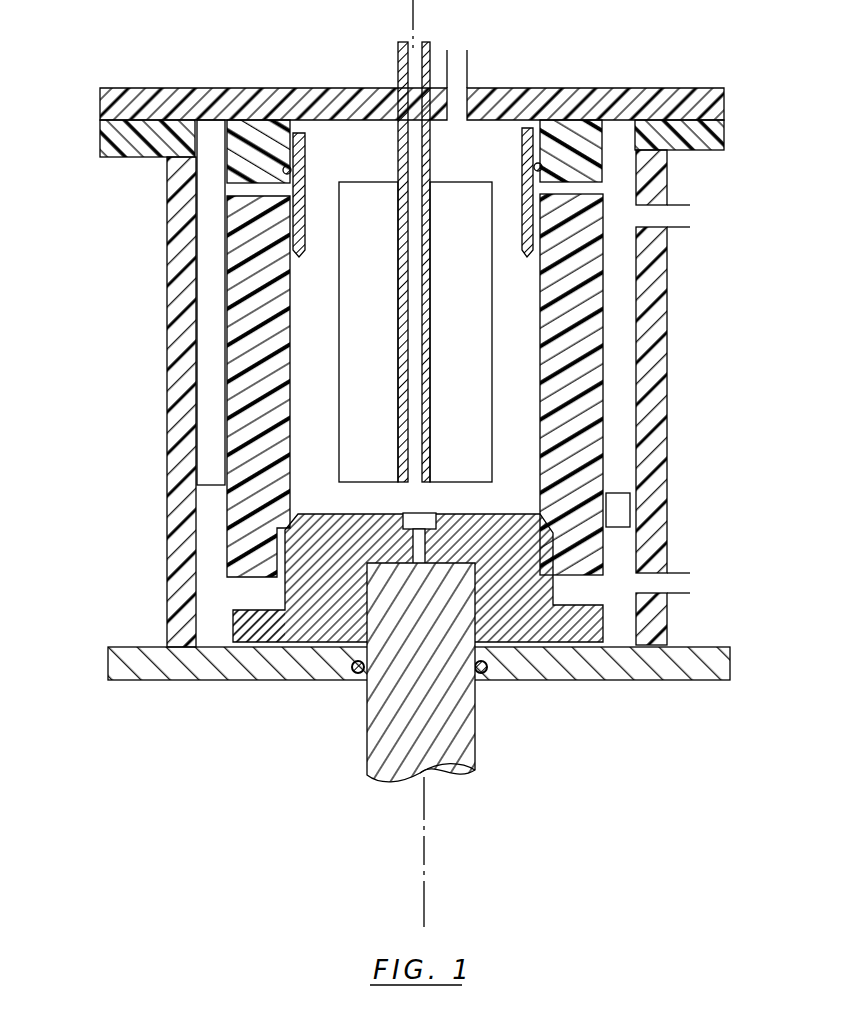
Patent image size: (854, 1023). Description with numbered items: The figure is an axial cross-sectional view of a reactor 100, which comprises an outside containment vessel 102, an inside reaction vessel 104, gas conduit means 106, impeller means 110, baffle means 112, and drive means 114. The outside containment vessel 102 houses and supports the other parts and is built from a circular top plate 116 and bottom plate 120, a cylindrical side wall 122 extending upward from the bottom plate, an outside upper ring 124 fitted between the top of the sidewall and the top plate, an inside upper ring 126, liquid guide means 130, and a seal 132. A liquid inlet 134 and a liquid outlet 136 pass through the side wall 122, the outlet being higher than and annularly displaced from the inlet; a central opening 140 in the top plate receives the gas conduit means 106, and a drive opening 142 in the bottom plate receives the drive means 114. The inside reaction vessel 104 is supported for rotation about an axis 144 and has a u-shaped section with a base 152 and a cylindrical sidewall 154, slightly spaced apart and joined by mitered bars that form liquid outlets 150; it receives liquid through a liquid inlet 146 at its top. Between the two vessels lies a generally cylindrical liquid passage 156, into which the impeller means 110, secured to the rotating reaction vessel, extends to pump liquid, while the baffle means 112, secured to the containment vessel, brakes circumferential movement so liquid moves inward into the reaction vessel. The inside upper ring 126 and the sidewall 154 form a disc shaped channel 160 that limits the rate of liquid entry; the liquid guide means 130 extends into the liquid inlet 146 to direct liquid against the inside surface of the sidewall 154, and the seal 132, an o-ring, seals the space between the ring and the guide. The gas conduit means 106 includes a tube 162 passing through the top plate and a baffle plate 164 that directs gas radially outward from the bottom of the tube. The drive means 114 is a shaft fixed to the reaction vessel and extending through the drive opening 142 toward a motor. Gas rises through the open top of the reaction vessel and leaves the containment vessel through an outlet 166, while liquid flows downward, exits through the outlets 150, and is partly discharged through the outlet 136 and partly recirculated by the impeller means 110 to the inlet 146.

The reactor 100 is at (173, 752).
The outside containment vessel 102 is at (166, 312).
The inside reaction vessel 104 is at (605, 367).
The gas conduit means 106 is at (398, 145).
The impeller means 110 is at (623, 523).
The baffle means 112 is at (210, 458).
The drive means 114 is at (462, 718).
The top plate 116 is at (213, 97).
The bottom plate 120 is at (240, 683).
The cylindrical side wall 122 is at (178, 395).
The outside upper ring 124 is at (135, 160).
The inside upper ring 126 is at (575, 115).
The liquid guide means 130 is at (305, 243).
The seal 132 is at (527, 165).
The liquid inlet 134 is at (658, 597).
The liquid outlet 136 is at (655, 233).
The central opening 140 is at (392, 100).
The drive opening 142 is at (360, 672).
The axis 144 is at (424, 830).
The liquid inlet 146 is at (293, 220).
The liquid outlet 150 is at (285, 590).
The base 152 is at (418, 577).
The cylindrical sidewall 154 is at (600, 318).
The liquid passage 156 is at (620, 440).
The disc shaped channel 160 is at (595, 190).
The tube 162 is at (430, 250).
The baffle plate 164 is at (415, 332).
The outlet 166 is at (466, 85).